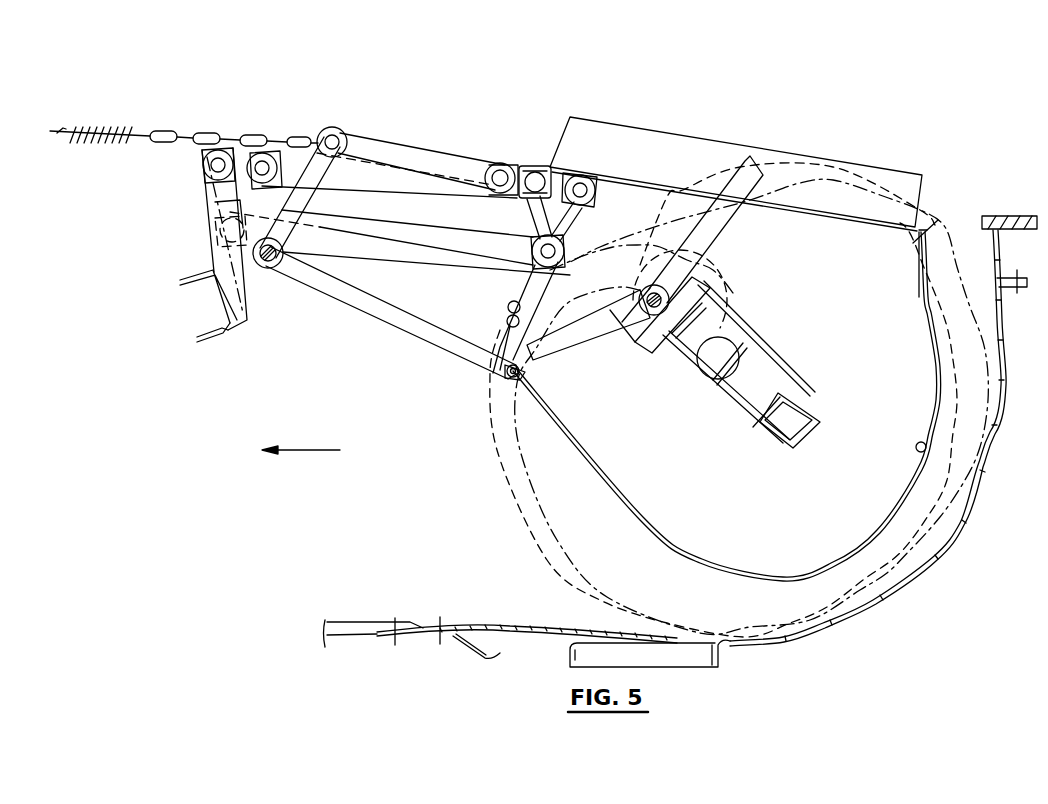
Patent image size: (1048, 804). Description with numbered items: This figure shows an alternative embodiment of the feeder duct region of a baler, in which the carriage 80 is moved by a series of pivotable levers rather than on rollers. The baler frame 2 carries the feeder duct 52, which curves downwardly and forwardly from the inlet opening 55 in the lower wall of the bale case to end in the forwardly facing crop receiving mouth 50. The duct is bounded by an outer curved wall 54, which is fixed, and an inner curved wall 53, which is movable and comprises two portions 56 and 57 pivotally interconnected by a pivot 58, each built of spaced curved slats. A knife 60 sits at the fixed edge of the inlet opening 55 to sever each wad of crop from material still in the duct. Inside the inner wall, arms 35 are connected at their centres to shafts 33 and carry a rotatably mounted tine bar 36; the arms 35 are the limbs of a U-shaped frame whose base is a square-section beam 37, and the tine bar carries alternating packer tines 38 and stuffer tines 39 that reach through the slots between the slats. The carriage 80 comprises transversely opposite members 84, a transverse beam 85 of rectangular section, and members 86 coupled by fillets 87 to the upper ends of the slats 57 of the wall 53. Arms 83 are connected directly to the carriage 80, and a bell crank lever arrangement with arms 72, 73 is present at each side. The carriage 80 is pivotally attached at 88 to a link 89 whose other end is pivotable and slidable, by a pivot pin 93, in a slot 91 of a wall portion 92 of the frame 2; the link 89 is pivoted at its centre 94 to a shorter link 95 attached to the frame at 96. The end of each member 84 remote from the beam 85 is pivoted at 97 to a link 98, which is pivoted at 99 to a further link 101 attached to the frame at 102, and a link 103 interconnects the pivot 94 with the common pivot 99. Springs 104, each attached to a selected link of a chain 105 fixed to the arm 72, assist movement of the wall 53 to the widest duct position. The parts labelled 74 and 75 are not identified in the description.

The frame 2 is at (210, 340).
The shaft 33 is at (708, 380).
The arms 35 is at (716, 402).
The tine bar 36 is at (630, 327).
The beam 37 is at (815, 420).
The packer tines 38 is at (565, 350).
The stuffer tines 39 is at (725, 230).
The crop receiving mouth 50 is at (441, 515).
The feeder duct 52 is at (905, 540).
The inner curved wall 53 is at (877, 533).
The outer curved wall 54 is at (958, 526).
The bale case inlet opening 55 is at (968, 210).
The first inner wall portion 56 is at (681, 550).
The second inner wall portion 57 is at (937, 342).
The pivot 58 is at (916, 450).
The knife 60 is at (1012, 216).
The bell crank lever arm 72 is at (310, 206).
The bell crank lever arm 73 is at (362, 300).
The pivot pulley 74 is at (275, 268).
The pivot pin 75 is at (508, 370).
The carriage 80 is at (455, 125).
The arms 83 is at (390, 150).
The carriage members 84 is at (400, 189).
The transverse beam 85 is at (533, 165).
The carriage members 86 is at (605, 127).
The fillets 87 is at (910, 243).
The pivot 88 is at (590, 190).
The link 89 is at (572, 214).
The slot 91 is at (506, 320).
The wall portion 92 is at (451, 298).
The pivot pin 93 is at (510, 310).
The centre pivot 94 is at (558, 262).
The shorter link 95 is at (535, 218).
The pivot 96 is at (540, 168).
The pivot 97 is at (235, 195).
The link 98 is at (240, 203).
The common pivot 99 is at (213, 240).
The further link 101 is at (215, 193).
The pivot 102 is at (203, 158).
The link 103 is at (367, 251).
The spring 104 is at (95, 127).
The chain 105 is at (245, 134).